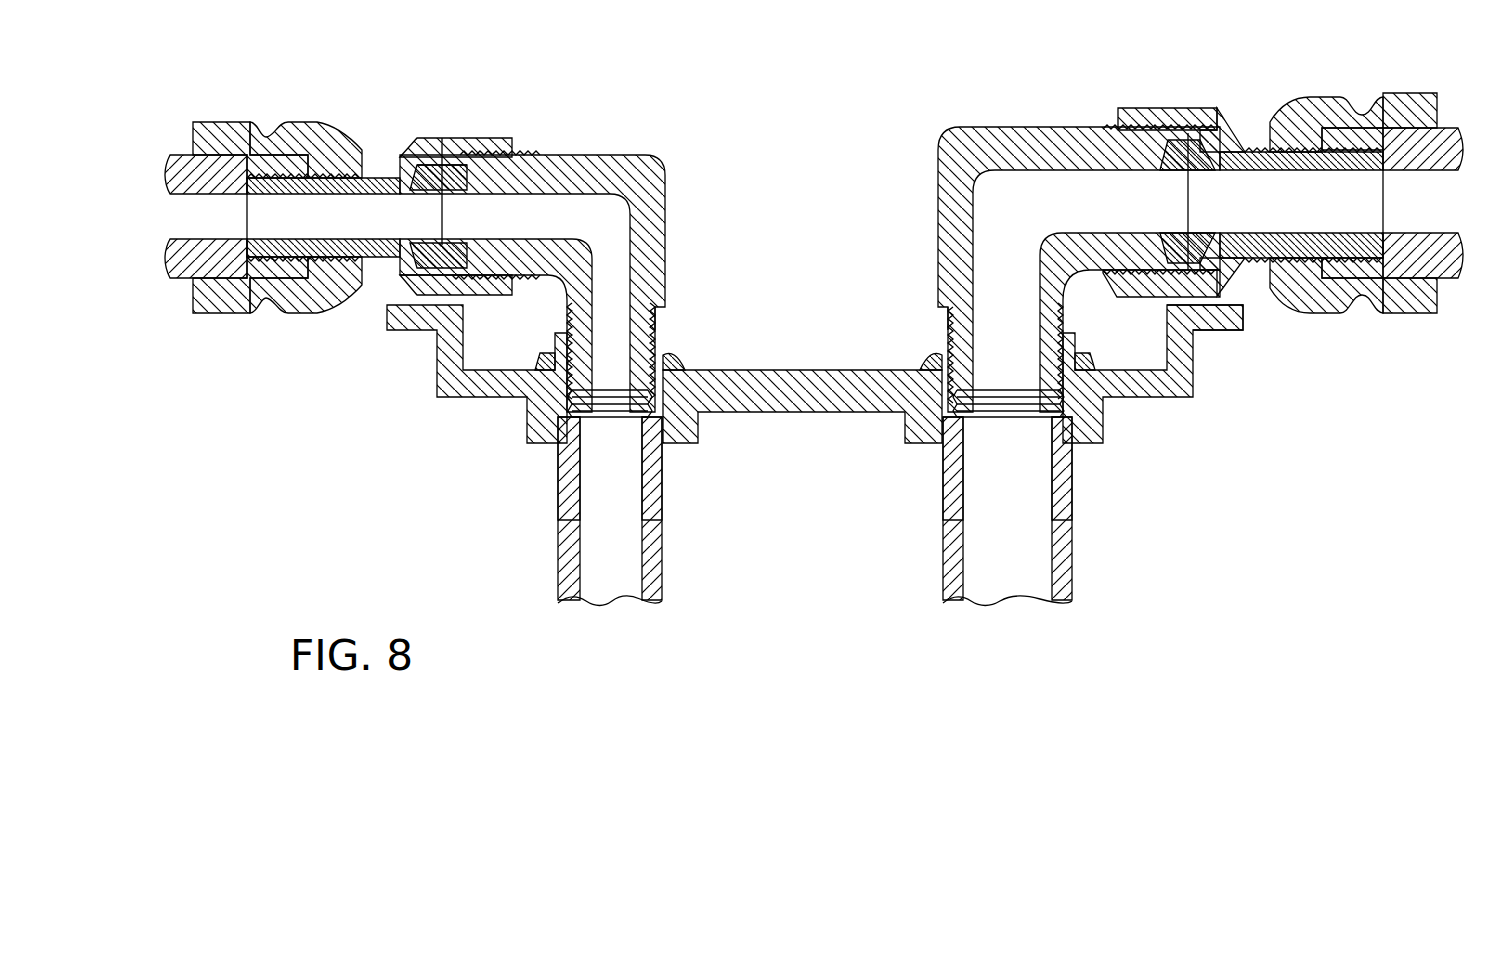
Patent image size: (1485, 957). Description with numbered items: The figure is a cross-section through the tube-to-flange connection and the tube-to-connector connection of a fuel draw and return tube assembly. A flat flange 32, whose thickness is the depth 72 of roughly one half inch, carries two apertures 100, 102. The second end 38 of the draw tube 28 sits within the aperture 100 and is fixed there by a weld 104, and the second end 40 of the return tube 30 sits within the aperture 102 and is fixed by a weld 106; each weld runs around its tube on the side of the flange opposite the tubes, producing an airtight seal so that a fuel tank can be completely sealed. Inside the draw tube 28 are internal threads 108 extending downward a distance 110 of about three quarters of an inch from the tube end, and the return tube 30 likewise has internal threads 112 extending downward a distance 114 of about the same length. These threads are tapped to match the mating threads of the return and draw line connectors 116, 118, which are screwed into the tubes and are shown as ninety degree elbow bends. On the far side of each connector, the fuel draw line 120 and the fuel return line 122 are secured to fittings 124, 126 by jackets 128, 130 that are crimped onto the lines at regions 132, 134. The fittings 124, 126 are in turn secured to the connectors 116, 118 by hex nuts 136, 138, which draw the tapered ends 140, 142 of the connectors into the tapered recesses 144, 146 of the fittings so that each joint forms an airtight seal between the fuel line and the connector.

The draw tube 28 is at (1068, 581).
The return tube 30 is at (563, 581).
The flange 32 is at (1245, 318).
The second end of draw tube 38 is at (1072, 503).
The second end of return tube 40 is at (570, 500).
The depth of flange 72 is at (799, 243).
The aperture of flange 100 is at (1083, 452).
The aperture of flange 102 is at (550, 452).
The weld 104 is at (1107, 342).
The weld 106 is at (547, 356).
The threads 108 is at (1014, 419).
The distance 110 is at (1235, 338).
The threads 112 is at (619, 419).
The distance 114 is at (397, 338).
The return line connector 116 is at (948, 315).
The draw line connector 118 is at (657, 316).
The fuel draw line 120 is at (1447, 280).
The fuel return line 122 is at (195, 292).
The fitting 124 is at (1263, 155).
The fitting 126 is at (368, 177).
The jacket 128 is at (1422, 95).
The jacket 130 is at (215, 128).
The crimped region 132 is at (1368, 95).
The crimped region 134 is at (266, 120).
The hex nut 136 is at (1133, 115).
The hex nut 138 is at (497, 140).
The tapered end of connector 140 is at (1186, 150).
The tapered end of connector 142 is at (447, 164).
The tapered recess of fitting 144 is at (1180, 163).
The tapered recess of fitting 146 is at (434, 172).